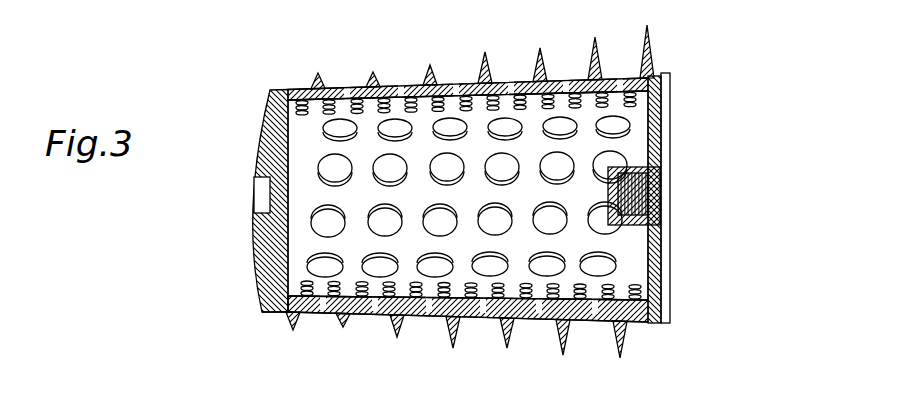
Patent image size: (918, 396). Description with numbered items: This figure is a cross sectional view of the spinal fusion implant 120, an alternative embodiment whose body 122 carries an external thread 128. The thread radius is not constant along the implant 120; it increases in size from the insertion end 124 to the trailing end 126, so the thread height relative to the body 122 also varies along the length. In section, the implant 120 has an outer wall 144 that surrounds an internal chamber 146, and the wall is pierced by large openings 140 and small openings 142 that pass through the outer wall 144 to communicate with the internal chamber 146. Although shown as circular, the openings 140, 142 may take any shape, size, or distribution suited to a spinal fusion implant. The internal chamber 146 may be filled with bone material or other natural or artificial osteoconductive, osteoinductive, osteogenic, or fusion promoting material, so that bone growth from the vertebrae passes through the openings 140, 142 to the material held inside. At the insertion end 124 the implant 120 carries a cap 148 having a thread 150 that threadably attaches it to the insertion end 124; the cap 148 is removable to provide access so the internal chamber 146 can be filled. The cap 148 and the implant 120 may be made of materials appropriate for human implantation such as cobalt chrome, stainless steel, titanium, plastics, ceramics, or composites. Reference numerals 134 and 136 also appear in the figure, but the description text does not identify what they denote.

The implant 120 is at (690, 73).
The body 122 is at (404, 84).
The insertion end 124 is at (281, 89).
The trailing end 126 is at (670, 172).
The external thread 128 is at (325, 88).
The bottom wall of housing 134 is at (662, 297).
The electrical connector 136 is at (658, 208).
The large openings 140 is at (330, 167).
The small openings 142 is at (660, 108).
The outer wall 144 is at (511, 86).
The internal chamber 146 is at (306, 205).
The cap 148 is at (258, 153).
The thread 150 is at (282, 306).